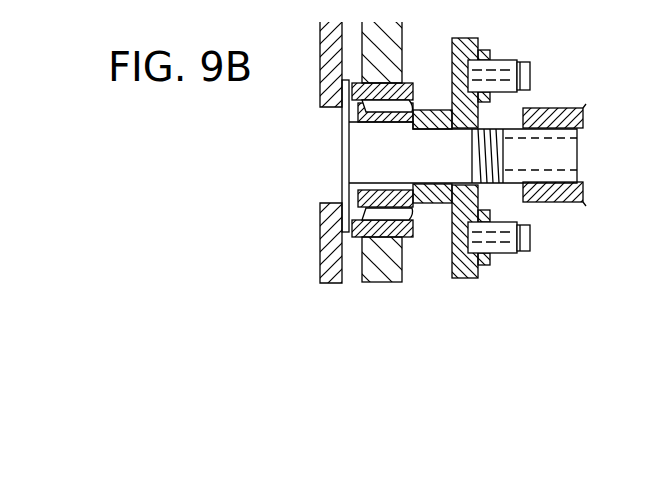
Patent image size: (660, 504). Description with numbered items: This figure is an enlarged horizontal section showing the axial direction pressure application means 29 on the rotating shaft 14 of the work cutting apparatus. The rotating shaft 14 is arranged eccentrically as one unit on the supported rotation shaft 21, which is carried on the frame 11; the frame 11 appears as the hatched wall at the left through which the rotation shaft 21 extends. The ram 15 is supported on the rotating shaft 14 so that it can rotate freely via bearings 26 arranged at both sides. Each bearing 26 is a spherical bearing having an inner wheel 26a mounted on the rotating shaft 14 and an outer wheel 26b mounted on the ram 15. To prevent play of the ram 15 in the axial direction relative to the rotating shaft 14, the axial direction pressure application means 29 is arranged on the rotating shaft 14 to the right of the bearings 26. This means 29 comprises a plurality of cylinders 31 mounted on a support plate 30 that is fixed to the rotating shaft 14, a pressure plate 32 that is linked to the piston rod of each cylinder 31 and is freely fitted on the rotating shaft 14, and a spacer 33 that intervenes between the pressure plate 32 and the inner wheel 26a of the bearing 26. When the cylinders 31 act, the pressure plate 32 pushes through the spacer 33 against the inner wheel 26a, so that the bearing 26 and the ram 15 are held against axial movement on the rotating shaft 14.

The frame 11 is at (340, 256).
The rotating shaft 14 is at (572, 158).
The ram 15 is at (402, 257).
The rotation shaft 21 is at (330, 140).
The bearings 26 is at (309, 170).
The inner wheel 26a is at (358, 196).
The outer wheel 26b is at (362, 226).
The axial direction pressure application means 29 is at (578, 12).
The support plate 30 is at (472, 38).
The cylinders 31 is at (507, 54).
The pressure plate 32 is at (447, 253).
The spacer 33 is at (427, 110).